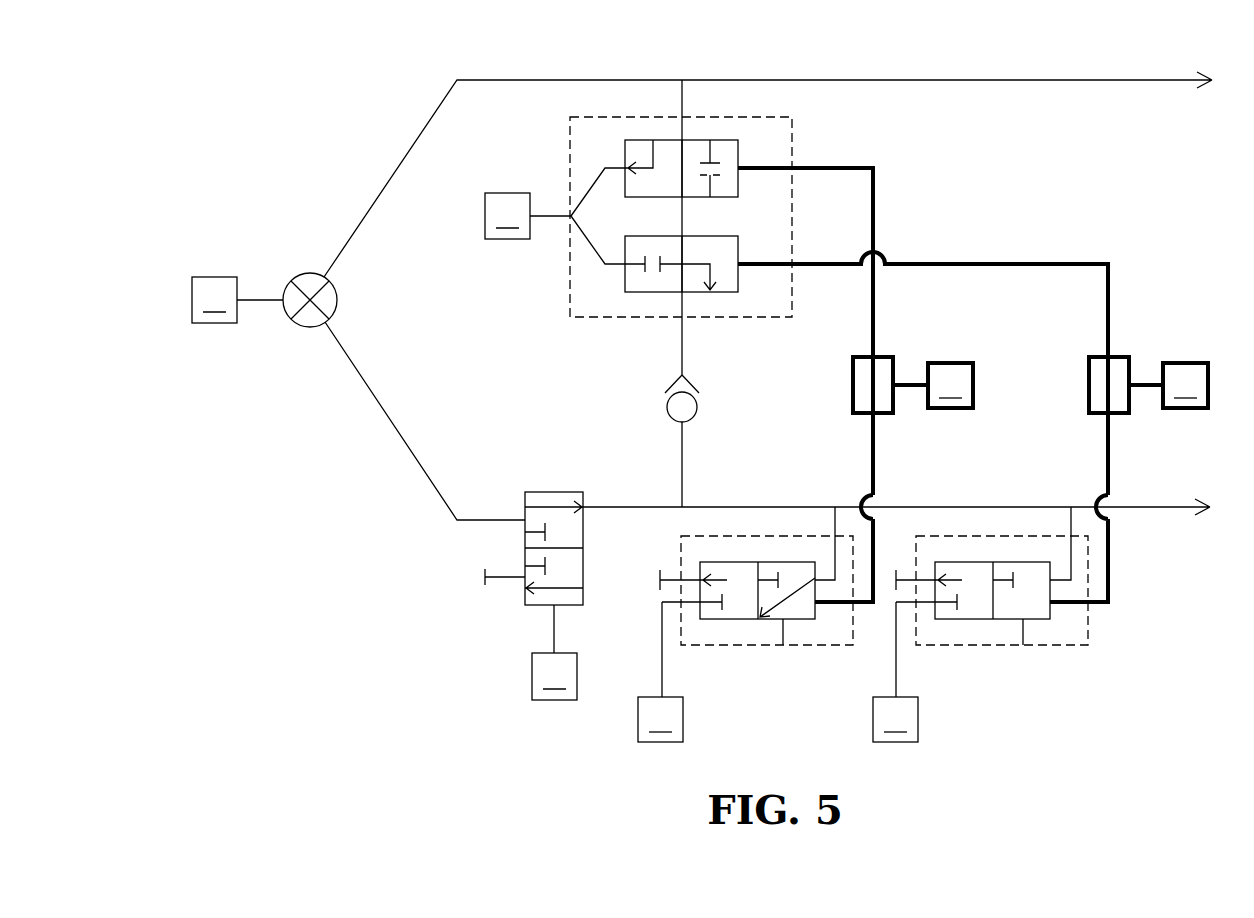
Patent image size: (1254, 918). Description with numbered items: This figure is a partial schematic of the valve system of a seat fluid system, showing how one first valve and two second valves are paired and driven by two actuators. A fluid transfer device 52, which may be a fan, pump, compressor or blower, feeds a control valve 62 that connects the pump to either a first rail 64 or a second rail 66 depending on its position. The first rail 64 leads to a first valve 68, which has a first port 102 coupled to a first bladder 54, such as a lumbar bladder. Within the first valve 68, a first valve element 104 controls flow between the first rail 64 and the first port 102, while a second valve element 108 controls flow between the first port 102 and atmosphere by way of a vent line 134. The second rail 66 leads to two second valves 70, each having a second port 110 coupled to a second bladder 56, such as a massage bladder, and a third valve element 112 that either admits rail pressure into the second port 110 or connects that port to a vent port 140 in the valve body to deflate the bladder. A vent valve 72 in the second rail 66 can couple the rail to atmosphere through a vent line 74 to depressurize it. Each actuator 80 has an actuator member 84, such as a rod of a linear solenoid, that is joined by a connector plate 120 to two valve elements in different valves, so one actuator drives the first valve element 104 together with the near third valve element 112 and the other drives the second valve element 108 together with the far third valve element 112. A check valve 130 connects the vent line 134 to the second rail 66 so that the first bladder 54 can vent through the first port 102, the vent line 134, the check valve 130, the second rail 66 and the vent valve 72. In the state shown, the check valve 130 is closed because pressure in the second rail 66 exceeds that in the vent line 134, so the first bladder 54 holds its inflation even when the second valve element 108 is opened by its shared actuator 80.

The fluid transfer device 52 is at (237, 300).
The first bladder 54 is at (528, 216).
The second bladder 56 is at (778, 719).
The control valve 62 is at (310, 272).
The first rail 64 is at (573, 78).
The second rail 66 is at (379, 404).
The first valve 68 is at (655, 113).
The second valve 70 is at (828, 645).
The vent valve 72 is at (553, 505).
The vent line 74 is at (503, 580).
The actuator 80 is at (870, 531).
The actuator member 84 is at (905, 383).
The first port 102 is at (551, 212).
The first valve element 104 is at (723, 140).
The second valve element 108 is at (975, 262).
The second port 110 is at (660, 668).
The third valve element 112 is at (879, 475).
The connector plate 120 is at (850, 385).
The check valve 130 is at (640, 413).
The vent line 134 is at (684, 372).
The vent port 140 is at (693, 578).